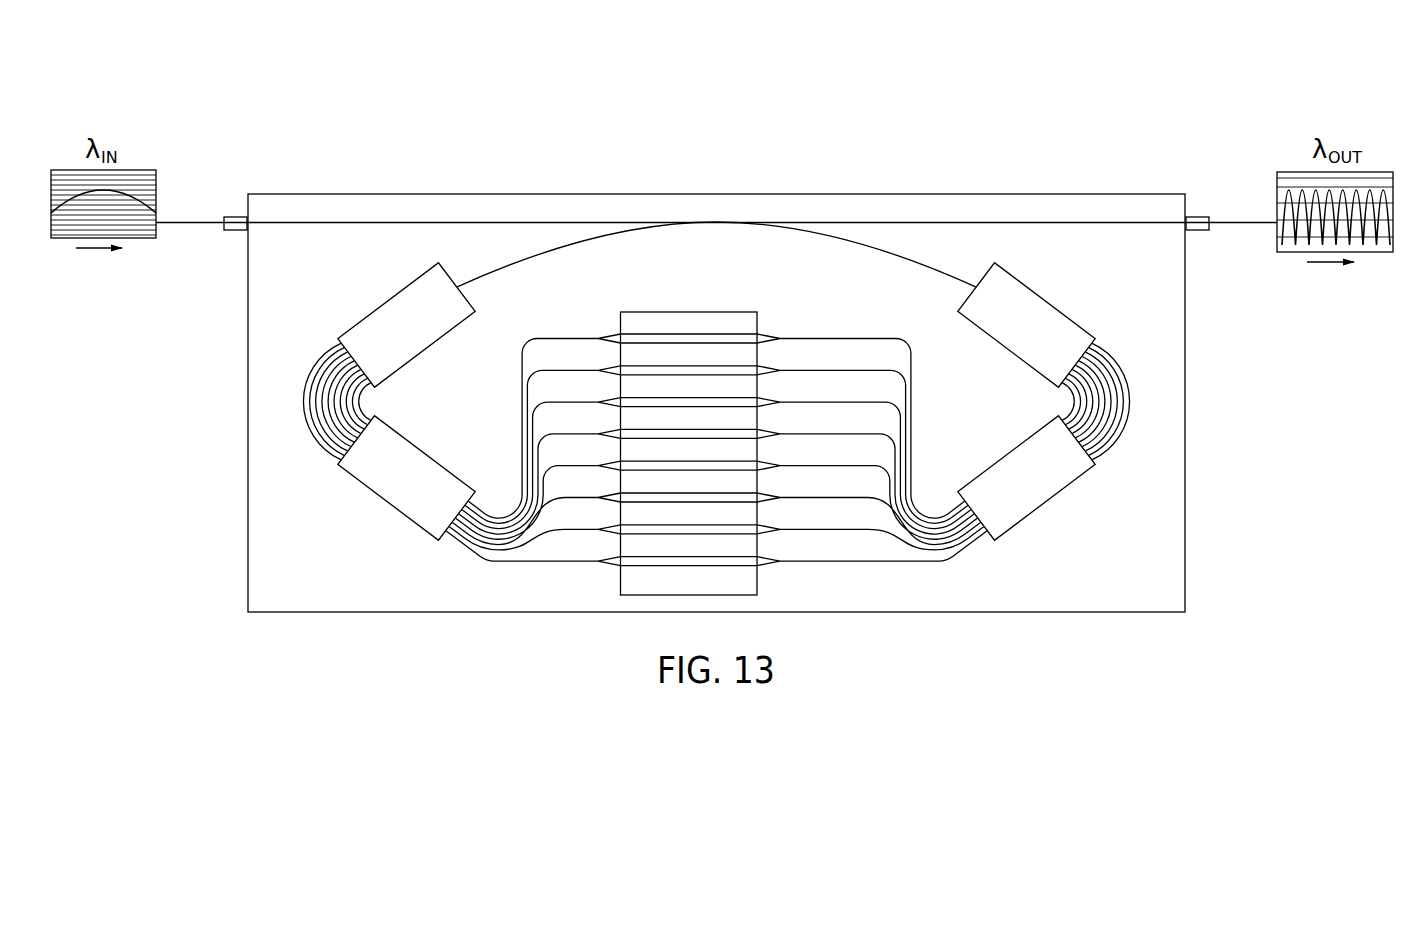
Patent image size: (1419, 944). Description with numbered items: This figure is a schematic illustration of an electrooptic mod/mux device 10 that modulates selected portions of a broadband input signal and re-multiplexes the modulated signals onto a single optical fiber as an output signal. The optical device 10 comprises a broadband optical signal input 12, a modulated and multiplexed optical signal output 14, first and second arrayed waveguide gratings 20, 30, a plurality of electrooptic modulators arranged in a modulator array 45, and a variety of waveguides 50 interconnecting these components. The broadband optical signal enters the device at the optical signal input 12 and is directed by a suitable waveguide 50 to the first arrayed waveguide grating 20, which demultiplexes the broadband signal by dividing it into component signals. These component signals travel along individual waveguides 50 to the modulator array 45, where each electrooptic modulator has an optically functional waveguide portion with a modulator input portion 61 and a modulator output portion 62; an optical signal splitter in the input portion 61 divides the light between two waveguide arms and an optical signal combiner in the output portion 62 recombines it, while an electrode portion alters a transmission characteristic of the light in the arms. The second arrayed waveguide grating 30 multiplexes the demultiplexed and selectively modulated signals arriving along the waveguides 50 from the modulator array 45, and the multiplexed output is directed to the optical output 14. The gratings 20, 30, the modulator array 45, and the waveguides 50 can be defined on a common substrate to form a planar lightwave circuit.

The electrooptic mod/mux device 10 is at (716, 323).
The broadband optical signal input 12 is at (233, 217).
The modulated and multiplexed optical signal output 14 is at (1203, 217).
The first arrayed waveguide grating 20 is at (942, 381).
The second arrayed waveguide grating 30 is at (493, 381).
The modulator array 45 is at (690, 312).
The waveguides 50 is at (375, 223).
The modulator input portion 61 is at (716, 404).
The modulator output portion 62 is at (656, 411).